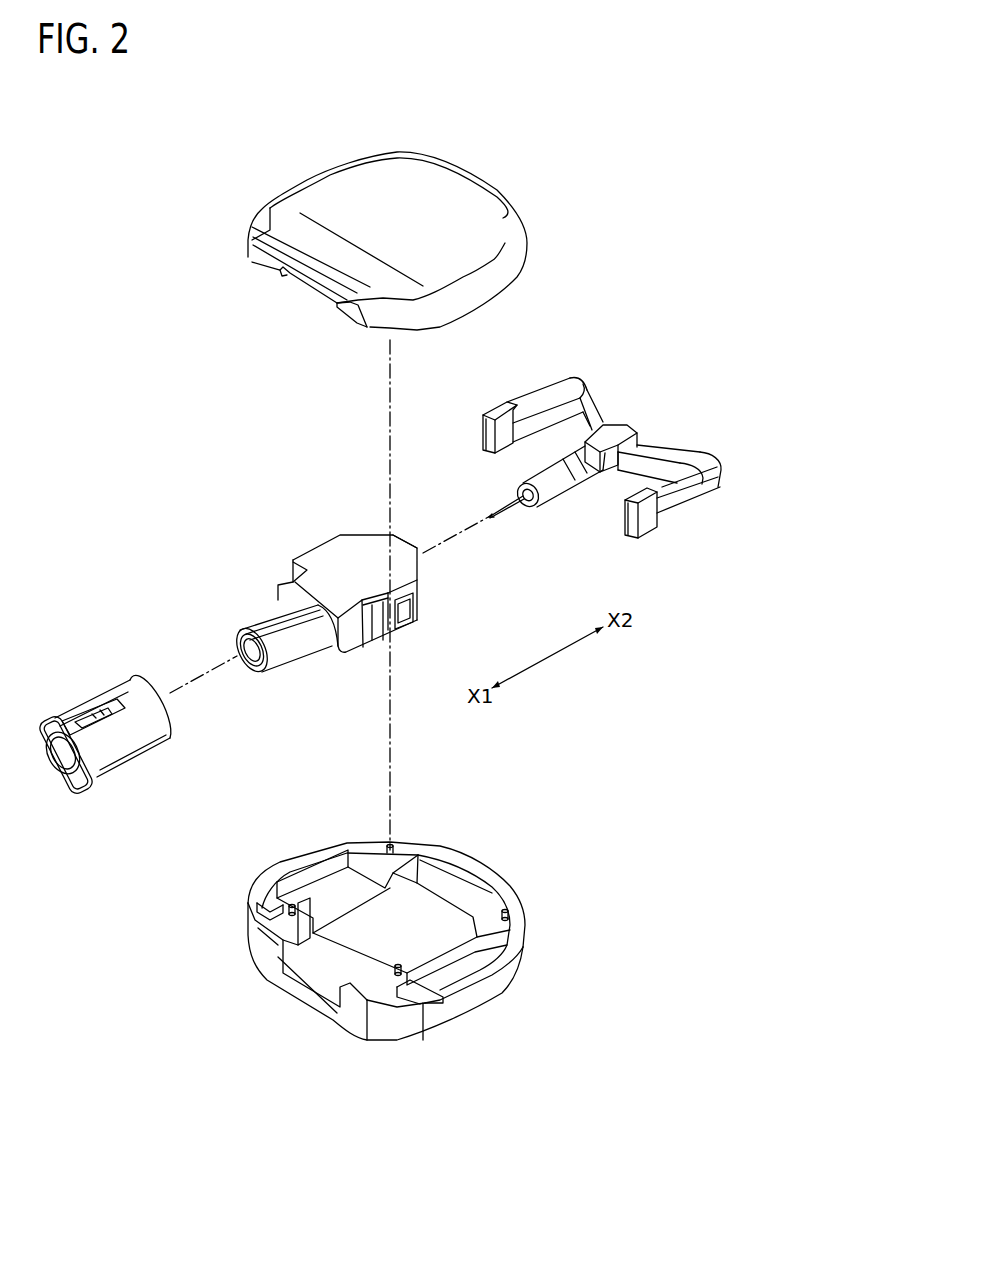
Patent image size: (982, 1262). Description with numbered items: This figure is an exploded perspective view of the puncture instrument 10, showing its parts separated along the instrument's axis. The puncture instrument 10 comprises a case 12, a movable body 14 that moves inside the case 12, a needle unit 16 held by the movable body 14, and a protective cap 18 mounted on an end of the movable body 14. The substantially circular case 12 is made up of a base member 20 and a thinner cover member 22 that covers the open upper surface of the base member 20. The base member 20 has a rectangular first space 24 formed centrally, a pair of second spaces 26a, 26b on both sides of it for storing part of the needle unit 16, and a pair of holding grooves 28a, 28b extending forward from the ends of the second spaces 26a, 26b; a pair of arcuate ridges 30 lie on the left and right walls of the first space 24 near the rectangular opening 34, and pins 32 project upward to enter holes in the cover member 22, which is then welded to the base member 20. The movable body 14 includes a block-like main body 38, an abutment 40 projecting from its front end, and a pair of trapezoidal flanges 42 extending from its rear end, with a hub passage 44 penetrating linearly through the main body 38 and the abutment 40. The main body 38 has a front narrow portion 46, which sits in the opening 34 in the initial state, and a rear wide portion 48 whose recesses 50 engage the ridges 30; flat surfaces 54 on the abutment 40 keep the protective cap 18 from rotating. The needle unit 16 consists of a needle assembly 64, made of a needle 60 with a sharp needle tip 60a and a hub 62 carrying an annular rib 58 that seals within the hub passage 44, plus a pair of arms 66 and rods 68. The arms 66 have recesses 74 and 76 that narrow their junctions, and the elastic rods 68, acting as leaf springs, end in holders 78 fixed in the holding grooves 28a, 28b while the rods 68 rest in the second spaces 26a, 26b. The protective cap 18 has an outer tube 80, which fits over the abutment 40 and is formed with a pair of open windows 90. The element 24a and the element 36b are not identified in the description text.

The puncture instrument 10 is at (656, 111).
The case 12 is at (387, 578).
The movable body 14 is at (343, 527).
The needle unit 16 is at (500, 375).
The protective cap 18 is at (129, 778).
The base member 20 is at (395, 1020).
The cover member 22 is at (338, 185).
The first space 24 is at (425, 900).
The partition surface 24a is at (470, 886).
The second space 26a is at (330, 877).
The second space 26b is at (482, 955).
The holding groove 28a is at (268, 903).
The holding groove 28b is at (413, 990).
The ridge 30 is at (255, 920).
The pin 32 is at (512, 915).
The opening 34 is at (311, 287).
The side wall 36b is at (290, 212).
The main body 38 is at (312, 545).
The abutment 40 is at (298, 654).
The flange 42 is at (401, 553).
The hub passage 44 is at (251, 666).
The narrow portion 46 is at (290, 576).
The wide portion 48 is at (419, 588).
The recess 50 is at (358, 645).
The flat surface 54 is at (270, 620).
The annular rib 58 is at (583, 478).
The needle 60 is at (512, 515).
The needle tip 60a is at (491, 516).
The hub 62 is at (563, 492).
The needle assembly 64 is at (517, 476).
The arm 66 is at (587, 410).
The rod 68 is at (537, 395).
The recess 74 is at (605, 425).
The recess 76 is at (572, 375).
The holder 78 is at (480, 435).
The outer tube 80 is at (115, 693).
The window 90 is at (90, 713).